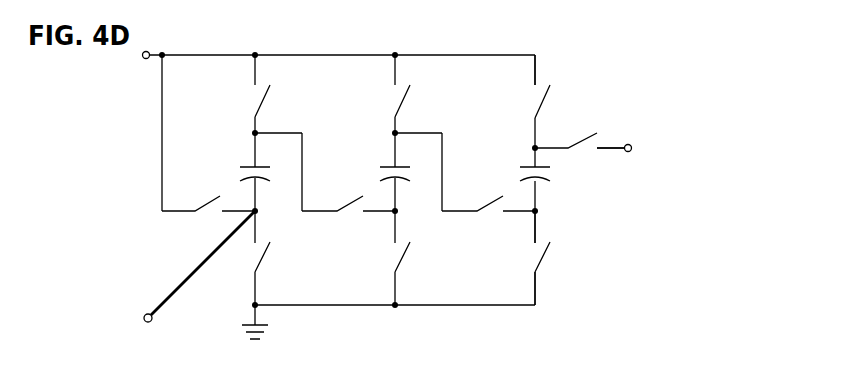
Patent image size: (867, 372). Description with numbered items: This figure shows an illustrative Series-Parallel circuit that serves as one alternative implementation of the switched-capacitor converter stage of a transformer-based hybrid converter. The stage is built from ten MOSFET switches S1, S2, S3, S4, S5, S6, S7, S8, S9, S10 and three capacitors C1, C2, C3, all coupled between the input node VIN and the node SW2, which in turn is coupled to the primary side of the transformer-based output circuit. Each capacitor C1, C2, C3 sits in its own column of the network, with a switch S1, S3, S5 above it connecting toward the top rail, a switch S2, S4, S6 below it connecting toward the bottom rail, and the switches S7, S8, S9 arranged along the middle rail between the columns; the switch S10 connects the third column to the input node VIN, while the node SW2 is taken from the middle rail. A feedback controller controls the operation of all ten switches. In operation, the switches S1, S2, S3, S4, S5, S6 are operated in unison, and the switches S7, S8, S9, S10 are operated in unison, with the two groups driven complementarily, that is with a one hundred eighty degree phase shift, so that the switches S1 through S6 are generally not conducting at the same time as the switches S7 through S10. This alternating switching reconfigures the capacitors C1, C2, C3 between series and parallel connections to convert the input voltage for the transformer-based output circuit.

The switch S1 is at (248, 94).
The switch S2 is at (248, 258).
The switch S3 is at (388, 94).
The switch S4 is at (388, 258).
The switch S5 is at (528, 86).
The switch S6 is at (528, 258).
The switch S7 is at (208, 219).
The switch S8 is at (348, 219).
The switch S9 is at (488, 219).
The switch S10 is at (583, 155).
The capacitor C1 is at (257, 172).
The capacitor C2 is at (396, 172).
The capacitor C3 is at (520, 176).
The node V_ SW2 is at (199, 279).
The input node V_IN VIN is at (634, 155).